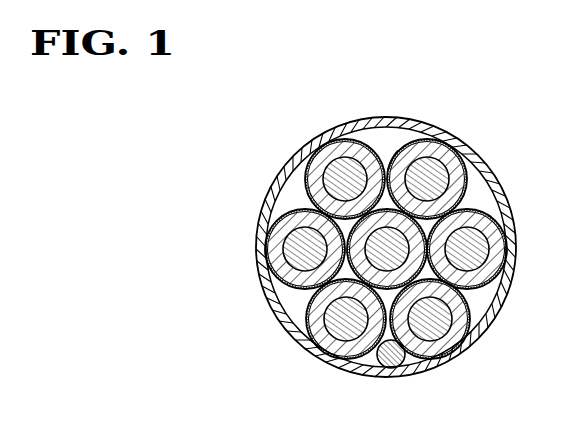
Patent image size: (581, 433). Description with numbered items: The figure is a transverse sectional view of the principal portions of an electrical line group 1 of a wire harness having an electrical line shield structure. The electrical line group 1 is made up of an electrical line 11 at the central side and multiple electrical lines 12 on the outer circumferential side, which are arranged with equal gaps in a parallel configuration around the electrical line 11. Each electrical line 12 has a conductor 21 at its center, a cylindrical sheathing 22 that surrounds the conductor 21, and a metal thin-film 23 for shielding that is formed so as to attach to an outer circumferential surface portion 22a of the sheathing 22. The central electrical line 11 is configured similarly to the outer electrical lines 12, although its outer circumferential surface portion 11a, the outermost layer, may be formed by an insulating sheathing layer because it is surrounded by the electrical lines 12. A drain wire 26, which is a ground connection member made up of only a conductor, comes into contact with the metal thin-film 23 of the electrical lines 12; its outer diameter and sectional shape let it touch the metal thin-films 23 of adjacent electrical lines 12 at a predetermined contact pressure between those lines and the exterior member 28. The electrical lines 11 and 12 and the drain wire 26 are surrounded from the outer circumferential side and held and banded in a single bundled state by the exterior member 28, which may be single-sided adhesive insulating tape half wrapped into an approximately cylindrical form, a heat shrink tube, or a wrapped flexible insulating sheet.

The electrical line group 1 is at (475, 196).
The electrical line 11 is at (389, 243).
The outer circumferential surface portion 11a is at (398, 150).
The electrical lines 12 is at (361, 163).
The conductor 21 is at (276, 251).
The sheathing 22 is at (280, 222).
The outer circumferential surface portion 22a is at (472, 290).
The metal thin-film 23 is at (284, 284).
The drain wire 26 is at (391, 369).
The exterior member 28 is at (476, 151).